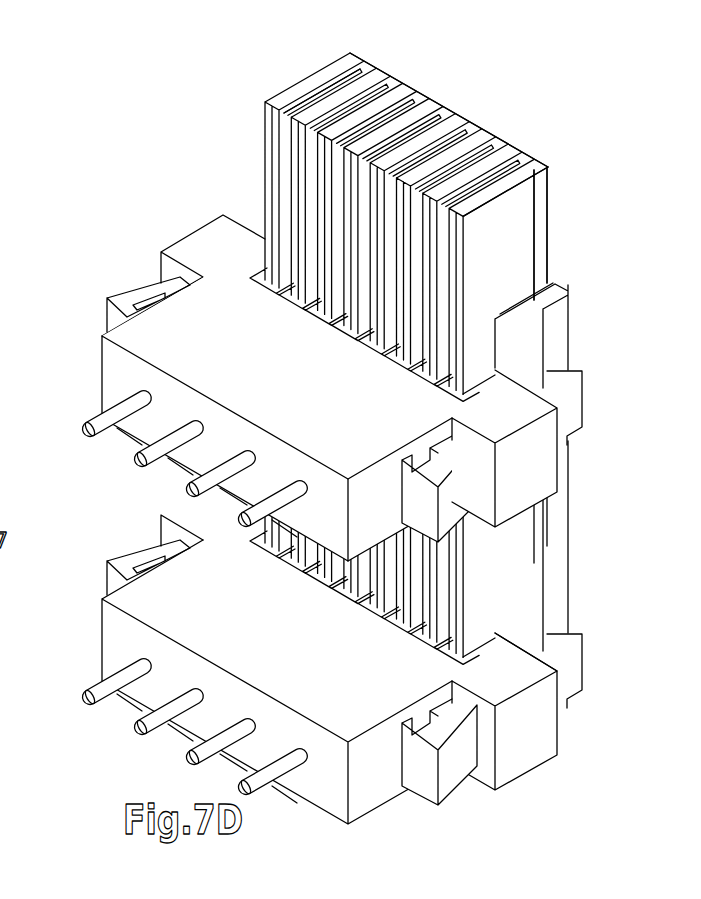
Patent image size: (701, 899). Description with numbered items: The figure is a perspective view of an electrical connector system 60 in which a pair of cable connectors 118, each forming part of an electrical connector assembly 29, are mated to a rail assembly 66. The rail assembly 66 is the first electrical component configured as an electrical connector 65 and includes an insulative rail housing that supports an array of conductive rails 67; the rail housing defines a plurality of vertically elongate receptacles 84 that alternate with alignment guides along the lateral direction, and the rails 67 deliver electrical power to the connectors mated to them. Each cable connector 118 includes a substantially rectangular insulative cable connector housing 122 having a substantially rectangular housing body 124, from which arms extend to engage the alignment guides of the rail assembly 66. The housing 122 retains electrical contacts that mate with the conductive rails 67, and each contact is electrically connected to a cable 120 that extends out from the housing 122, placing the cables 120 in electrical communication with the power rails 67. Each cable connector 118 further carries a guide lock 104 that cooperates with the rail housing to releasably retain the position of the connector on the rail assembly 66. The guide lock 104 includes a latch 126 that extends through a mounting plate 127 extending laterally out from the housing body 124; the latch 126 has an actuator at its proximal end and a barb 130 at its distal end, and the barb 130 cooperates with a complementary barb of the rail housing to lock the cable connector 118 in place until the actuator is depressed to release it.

The electrical connector assembly 29 is at (99, 333).
The electrical connector system 60 is at (519, 119).
The electrical connector 65 is at (551, 247).
The rail assembly 66 is at (520, 202).
The conductive rails 67 is at (435, 98).
The receptacles 84 is at (373, 102).
The guide lock 104 is at (122, 294).
The cable connector 118 is at (173, 237).
The cables 120 is at (97, 410).
The cable connector housing 122 is at (120, 372).
The housing body 124 is at (118, 384).
The latch 126 is at (548, 763).
The mounting plate 127 is at (540, 727).
The barb 130 is at (556, 370).